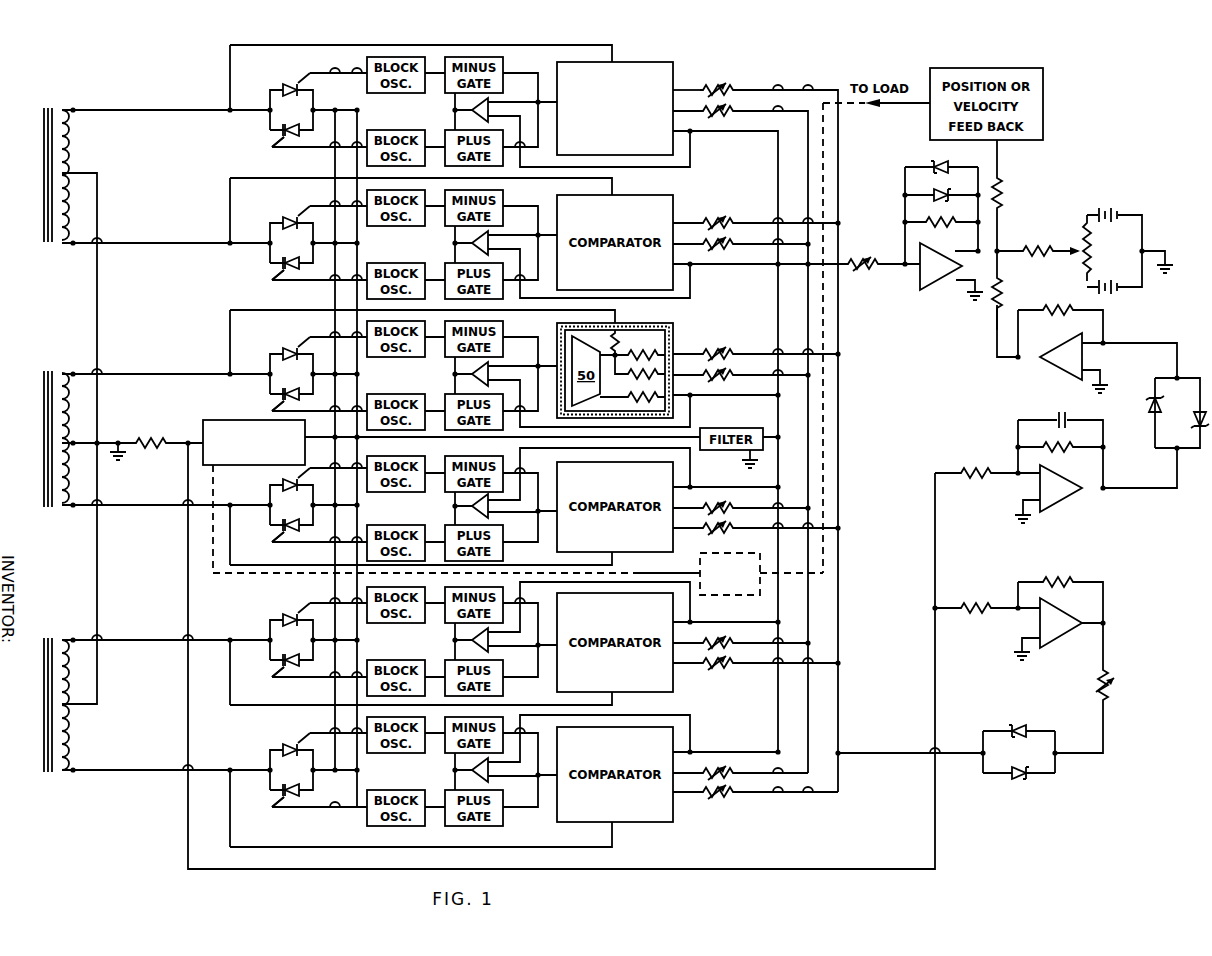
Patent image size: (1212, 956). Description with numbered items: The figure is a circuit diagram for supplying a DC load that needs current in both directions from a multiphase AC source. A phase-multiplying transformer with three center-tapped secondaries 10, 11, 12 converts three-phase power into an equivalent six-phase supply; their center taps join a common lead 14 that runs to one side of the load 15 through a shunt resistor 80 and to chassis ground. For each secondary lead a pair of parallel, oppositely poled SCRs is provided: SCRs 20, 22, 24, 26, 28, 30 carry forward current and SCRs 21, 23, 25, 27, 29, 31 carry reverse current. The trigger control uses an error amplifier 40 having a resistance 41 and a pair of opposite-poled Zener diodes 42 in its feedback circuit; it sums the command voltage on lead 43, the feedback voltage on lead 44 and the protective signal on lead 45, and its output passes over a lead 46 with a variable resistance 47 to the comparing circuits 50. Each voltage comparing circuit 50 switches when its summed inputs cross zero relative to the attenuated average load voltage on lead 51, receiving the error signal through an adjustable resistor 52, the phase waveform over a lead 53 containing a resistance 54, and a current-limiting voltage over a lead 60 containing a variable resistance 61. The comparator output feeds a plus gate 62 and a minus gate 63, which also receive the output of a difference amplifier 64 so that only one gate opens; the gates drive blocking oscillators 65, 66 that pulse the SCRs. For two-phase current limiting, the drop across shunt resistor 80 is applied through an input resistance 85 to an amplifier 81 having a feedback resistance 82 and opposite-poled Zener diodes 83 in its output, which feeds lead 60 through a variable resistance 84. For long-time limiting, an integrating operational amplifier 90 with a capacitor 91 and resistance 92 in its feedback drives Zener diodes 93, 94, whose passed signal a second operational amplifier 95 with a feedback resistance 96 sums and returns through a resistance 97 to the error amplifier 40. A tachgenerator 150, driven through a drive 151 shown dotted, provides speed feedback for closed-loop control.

The transformer secondary 10 is at (44, 173).
The transformer secondary 11 is at (44, 435).
The transformer secondary 12 is at (44, 775).
The common lead 14 is at (97, 302).
The load 15 is at (213, 420).
The SCR 20 is at (290, 84).
The SCR 21 is at (290, 137).
The SCR 22 is at (290, 217).
The SCR 23 is at (290, 270).
The SCR 24 is at (290, 348).
The SCR 25 is at (290, 401).
The SCR 26 is at (290, 479).
The SCR 27 is at (290, 532).
The SCR 28 is at (290, 614).
The SCR 29 is at (290, 667).
The SCR 30 is at (290, 744).
The SCR 31 is at (290, 797).
The error amplifier 40 is at (951, 271).
The resistance 41 is at (948, 228).
The Zener diodes 42 is at (898, 183).
The lead 43 is at (1028, 258).
The lead 44 is at (1005, 235).
The lead 45 is at (1005, 290).
The lead 46 is at (822, 305).
The variable resistance 47 is at (870, 275).
The voltage comparing circuit 50 is at (660, 62).
The lead 51 is at (722, 131).
The adjustable resistor 52 is at (738, 108).
The lead 53 is at (614, 48).
The resistance 54 is at (620, 342).
The lead 60 is at (758, 90).
The variable resistance 61 is at (722, 85).
The plus gate 62 is at (449, 130).
The minus gate 63 is at (503, 60).
The difference amplifier 64 is at (490, 101).
The blocking oscillator 65 is at (415, 130).
The blocking oscillator 66 is at (380, 93).
The shunt resistor 80 is at (141, 443).
The amplifier 81 is at (1061, 623).
The resistance 82 is at (1058, 582).
The Zener diodes 83 is at (1036, 781).
The variable resistance 84 is at (1110, 690).
The input resistance 85 is at (987, 611).
The operational amplifier 90 is at (1061, 488).
The capacitor 91 is at (1062, 412).
The resistance 92 is at (1056, 452).
The Zener diode 93 is at (1150, 401).
The Zener diode 94 is at (1194, 418).
The operational amplifier 95 is at (1061, 356).
The feedback resistance 96 is at (1050, 310).
The resistance 97 is at (996, 315).
The tachgenerator 150 is at (710, 596).
The drive 151 is at (672, 578).